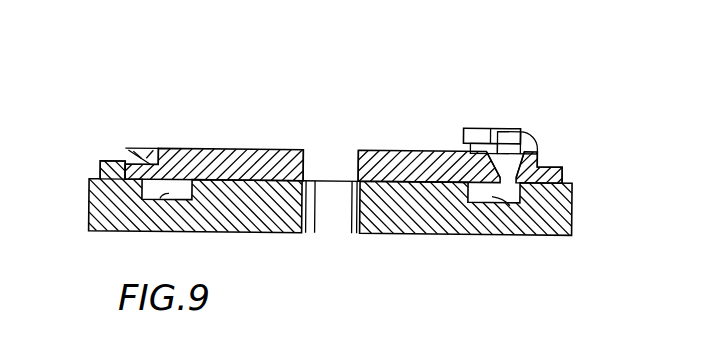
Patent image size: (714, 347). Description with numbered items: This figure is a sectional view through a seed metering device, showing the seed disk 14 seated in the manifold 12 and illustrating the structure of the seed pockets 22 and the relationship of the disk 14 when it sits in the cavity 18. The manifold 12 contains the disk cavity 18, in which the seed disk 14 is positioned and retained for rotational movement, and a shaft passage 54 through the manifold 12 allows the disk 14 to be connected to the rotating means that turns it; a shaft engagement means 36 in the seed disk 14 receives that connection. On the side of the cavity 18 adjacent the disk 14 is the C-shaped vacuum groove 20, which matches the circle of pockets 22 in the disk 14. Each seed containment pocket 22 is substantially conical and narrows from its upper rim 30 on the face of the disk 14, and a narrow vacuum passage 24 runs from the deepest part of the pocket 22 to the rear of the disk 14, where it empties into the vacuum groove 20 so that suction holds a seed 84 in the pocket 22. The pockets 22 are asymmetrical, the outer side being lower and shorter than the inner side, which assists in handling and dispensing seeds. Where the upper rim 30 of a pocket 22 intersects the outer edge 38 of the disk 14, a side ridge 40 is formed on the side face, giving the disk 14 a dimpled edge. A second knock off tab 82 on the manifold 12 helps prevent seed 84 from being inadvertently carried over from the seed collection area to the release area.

The manifold 12 is at (89, 174).
The seed disk 14 is at (275, 151).
The disk cavity 18 is at (270, 186).
The C-shaped vacuum groove 20 is at (158, 235).
The seed containment pocket 22 is at (157, 150).
The vacuum passage 24 is at (150, 150).
The upper rim 30 is at (172, 150).
The shaft engagement means 36 is at (333, 150).
The outer edge 38 is at (540, 151).
The side ridge 40 is at (122, 151).
The shaft passage 54 is at (336, 220).
The second knock off tab 82 is at (472, 127).
The seed 84 is at (528, 120).